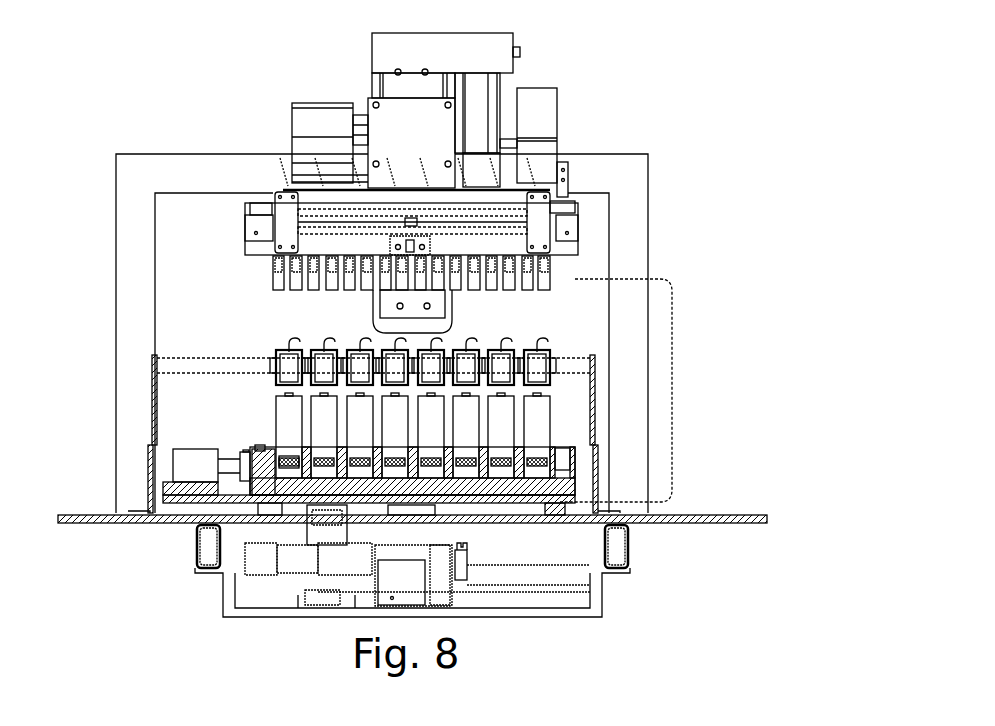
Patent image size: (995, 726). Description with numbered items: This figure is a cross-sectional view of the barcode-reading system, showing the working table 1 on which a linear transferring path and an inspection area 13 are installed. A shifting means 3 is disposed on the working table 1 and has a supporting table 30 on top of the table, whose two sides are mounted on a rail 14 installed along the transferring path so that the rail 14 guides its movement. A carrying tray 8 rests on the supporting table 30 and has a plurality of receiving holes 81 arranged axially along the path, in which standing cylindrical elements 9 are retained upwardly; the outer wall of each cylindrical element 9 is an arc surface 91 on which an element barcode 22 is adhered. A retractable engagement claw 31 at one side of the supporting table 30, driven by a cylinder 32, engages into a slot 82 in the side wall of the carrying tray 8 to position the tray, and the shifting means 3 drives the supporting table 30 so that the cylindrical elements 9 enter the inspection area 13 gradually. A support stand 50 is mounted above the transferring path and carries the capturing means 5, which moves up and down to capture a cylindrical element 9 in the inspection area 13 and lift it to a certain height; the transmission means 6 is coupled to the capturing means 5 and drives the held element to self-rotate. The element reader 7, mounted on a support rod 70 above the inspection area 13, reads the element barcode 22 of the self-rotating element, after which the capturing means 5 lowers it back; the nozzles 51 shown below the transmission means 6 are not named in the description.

The working table 1 is at (92, 523).
The shifting means 3 is at (288, 577).
The capturing means 5 is at (557, 138).
The transmission means 6 is at (265, 207).
The element reader 7 is at (280, 352).
The carrying tray 8 is at (432, 439).
The cylindrical element 9 is at (453, 428).
The inspection area 13 is at (672, 393).
The rail 14 is at (558, 523).
The element barcode 22 is at (545, 448).
The supporting table 30 is at (510, 505).
The retractable engagement claw 31 is at (237, 455).
The cylinder 32 is at (183, 465).
The support stand 50 is at (210, 170).
The nozzles 51 is at (275, 284).
The support rod 70 is at (200, 367).
The receiving hole 81 is at (288, 457).
The slot 82 is at (262, 452).
The arc surface 91 is at (541, 417).